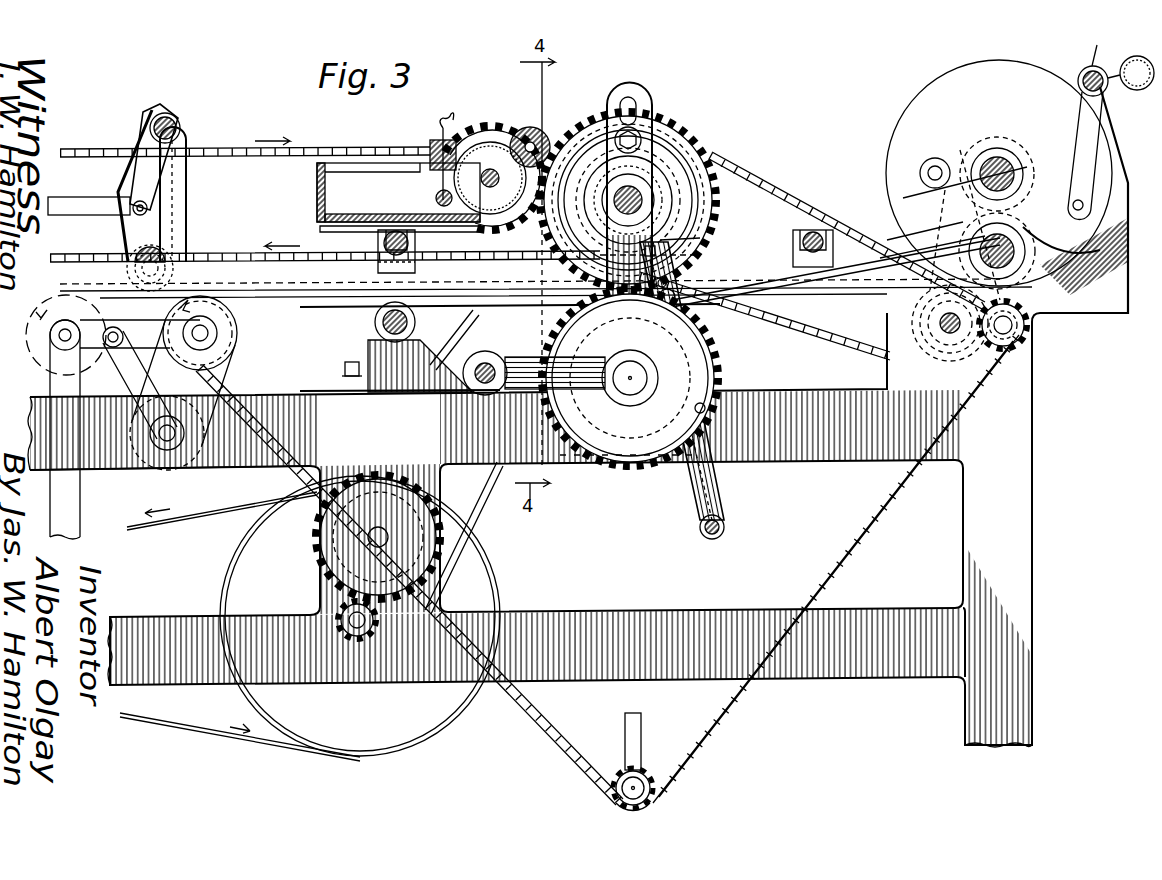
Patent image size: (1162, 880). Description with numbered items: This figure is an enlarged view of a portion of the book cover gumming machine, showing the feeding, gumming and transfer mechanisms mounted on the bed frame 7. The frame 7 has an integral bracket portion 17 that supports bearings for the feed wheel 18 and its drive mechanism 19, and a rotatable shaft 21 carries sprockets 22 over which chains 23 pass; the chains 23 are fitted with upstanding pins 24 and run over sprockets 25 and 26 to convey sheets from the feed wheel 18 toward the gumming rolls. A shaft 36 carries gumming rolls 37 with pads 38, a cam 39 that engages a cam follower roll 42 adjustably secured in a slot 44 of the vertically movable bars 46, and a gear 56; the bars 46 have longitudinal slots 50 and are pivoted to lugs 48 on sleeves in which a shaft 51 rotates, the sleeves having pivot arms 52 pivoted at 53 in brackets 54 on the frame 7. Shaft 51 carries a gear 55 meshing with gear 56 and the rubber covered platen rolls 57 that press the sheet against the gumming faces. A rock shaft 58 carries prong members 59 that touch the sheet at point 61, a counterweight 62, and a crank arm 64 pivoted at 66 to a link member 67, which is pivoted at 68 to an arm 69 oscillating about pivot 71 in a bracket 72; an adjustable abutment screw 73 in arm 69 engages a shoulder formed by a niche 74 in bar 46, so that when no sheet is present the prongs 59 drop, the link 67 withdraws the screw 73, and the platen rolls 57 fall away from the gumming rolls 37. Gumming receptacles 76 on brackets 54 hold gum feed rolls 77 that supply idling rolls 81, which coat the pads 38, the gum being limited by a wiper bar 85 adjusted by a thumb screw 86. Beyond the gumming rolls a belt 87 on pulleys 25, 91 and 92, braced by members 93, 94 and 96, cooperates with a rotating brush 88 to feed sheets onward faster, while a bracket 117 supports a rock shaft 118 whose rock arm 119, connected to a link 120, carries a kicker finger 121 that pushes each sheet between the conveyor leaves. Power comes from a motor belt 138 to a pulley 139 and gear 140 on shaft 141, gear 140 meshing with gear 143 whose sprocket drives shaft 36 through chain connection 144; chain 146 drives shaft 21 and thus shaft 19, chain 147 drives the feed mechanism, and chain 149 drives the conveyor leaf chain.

The bed frame 7 is at (1032, 600).
The bracket portion 17 is at (1034, 366).
The feed wheel 18 is at (935, 95).
The drive mechanism 19 is at (948, 340).
The rotatable shaft 21 is at (1010, 318).
The sprockets 22 is at (1025, 330).
The chains 23 is at (878, 530).
The upstanding pins 24 is at (350, 295).
The sprocket 25 is at (225, 340).
The sprockets 26 is at (645, 770).
The shaft 36 is at (612, 198).
The gumming rolls 37 is at (672, 140).
The pads 38 is at (665, 120).
The cam 39 is at (660, 200).
The cam follower roll 42 is at (640, 128).
The slot 44 is at (660, 84).
The vertically movable bars 46 is at (670, 215).
The lugs 48 is at (650, 385).
The longitudinal slots 50 is at (595, 145).
The shaft 51 is at (625, 380).
The pivot arms 52 is at (525, 390).
The pivot 53 is at (487, 352).
The brackets 54 is at (445, 395).
The gear 55 is at (705, 408).
The gear 56 is at (655, 170).
The platen rolls 57 is at (650, 462).
The rock shaft 58 is at (1080, 72).
The prong members 59 is at (880, 236).
The contact point 61 is at (765, 310).
The counterweight 62 is at (1138, 90).
The crank arm 64 is at (1082, 120).
The pivot 66 is at (1088, 246).
The link member 67 is at (780, 272).
The pivot 68 is at (676, 300).
The arm 69 is at (714, 450).
The pivot 71 is at (724, 527).
The bracket 72 is at (722, 486).
The adjustable abutment screw 73 is at (700, 238).
The niche 74 is at (440, 262).
The gumming receptacle 76 is at (398, 197).
The gum feed rolls 77 is at (493, 178).
The idling rolls 81 is at (530, 127).
The wiper bar 85 is at (436, 196).
The thumb screw 86 is at (440, 128).
The belt 87 is at (116, 465).
The brush 88 is at (170, 262).
The pulley 91 is at (40, 345).
The pulley 92 is at (205, 468).
The bracing member 93 is at (125, 378).
The bracing member 94 is at (155, 345).
The bracing member 96 is at (52, 500).
The bracket 117 is at (187, 185).
The rock shaft 118 is at (175, 112).
The rock arm 119 is at (130, 184).
The link 120 is at (82, 215).
The kicker finger 121 is at (140, 130).
The belt 138 is at (200, 726).
The pulley 139 is at (365, 756).
The gear 140 is at (360, 616).
The shaft 141 is at (345, 628).
The gear 143 is at (316, 566).
The chain connection 144 is at (480, 500).
The chain 146 is at (785, 170).
The chain 147 is at (950, 160).
The chain 149 is at (375, 188).